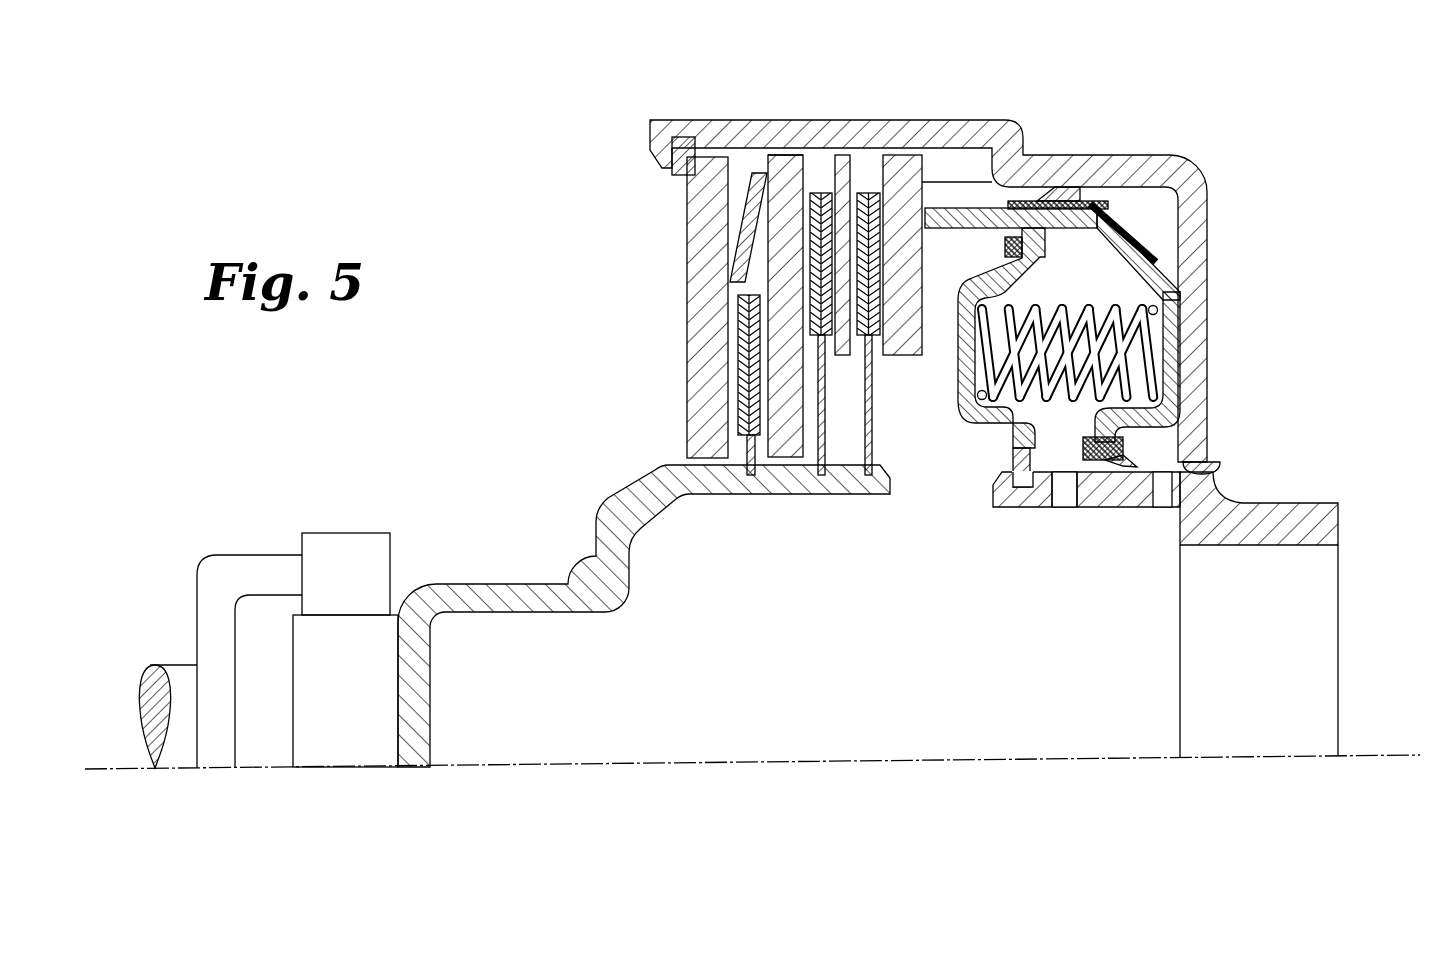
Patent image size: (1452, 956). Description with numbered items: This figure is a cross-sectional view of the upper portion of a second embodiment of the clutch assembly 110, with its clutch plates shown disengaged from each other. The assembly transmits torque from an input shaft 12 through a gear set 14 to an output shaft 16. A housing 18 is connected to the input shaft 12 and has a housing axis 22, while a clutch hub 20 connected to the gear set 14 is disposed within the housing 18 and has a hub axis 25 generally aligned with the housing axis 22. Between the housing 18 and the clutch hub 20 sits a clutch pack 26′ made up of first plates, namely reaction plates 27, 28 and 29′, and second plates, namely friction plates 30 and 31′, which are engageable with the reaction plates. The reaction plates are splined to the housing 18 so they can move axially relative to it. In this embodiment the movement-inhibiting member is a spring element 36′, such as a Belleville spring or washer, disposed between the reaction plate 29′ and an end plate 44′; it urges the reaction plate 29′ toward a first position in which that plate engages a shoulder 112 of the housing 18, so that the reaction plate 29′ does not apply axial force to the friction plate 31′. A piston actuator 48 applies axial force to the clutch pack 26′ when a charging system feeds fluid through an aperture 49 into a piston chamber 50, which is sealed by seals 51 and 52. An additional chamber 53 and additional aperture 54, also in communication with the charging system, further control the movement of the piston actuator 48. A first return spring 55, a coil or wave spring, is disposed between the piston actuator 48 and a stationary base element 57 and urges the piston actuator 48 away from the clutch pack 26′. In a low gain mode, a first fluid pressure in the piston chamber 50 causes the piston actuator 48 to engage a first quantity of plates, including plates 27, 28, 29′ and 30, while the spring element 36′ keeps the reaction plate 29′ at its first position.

The input shaft 12 is at (1262, 593).
The gear set 14 is at (371, 617).
The output shaft 16 is at (220, 661).
The housing 18 is at (970, 291).
The clutch hub 20 is at (644, 616).
The housing axis 22 is at (761, 811).
The hub axis 25 is at (761, 811).
The clutch pack 26′ is at (879, 328).
The reaction plate 27 is at (923, 201).
The reaction plate 28 is at (860, 201).
The reaction plate 29′ is at (767, 252).
The friction plate 30 is at (866, 261).
The friction plate 31′ is at (774, 419).
The spring element 36′ is at (729, 165).
The end plate 44′ is at (652, 307).
The piston actuator 48 is at (1108, 252).
The aperture 49 is at (1086, 520).
The piston chamber 50 is at (1124, 338).
The seal 51 is at (1058, 147).
The seal 52 is at (1110, 503).
The additional chamber 53 is at (1045, 520).
The additional aperture 54 is at (1078, 520).
The first return spring 55 is at (1134, 345).
The stationary base element 57 is at (977, 457).
The clutch assembly 110 is at (572, 202).
The shoulder 112 is at (791, 110).